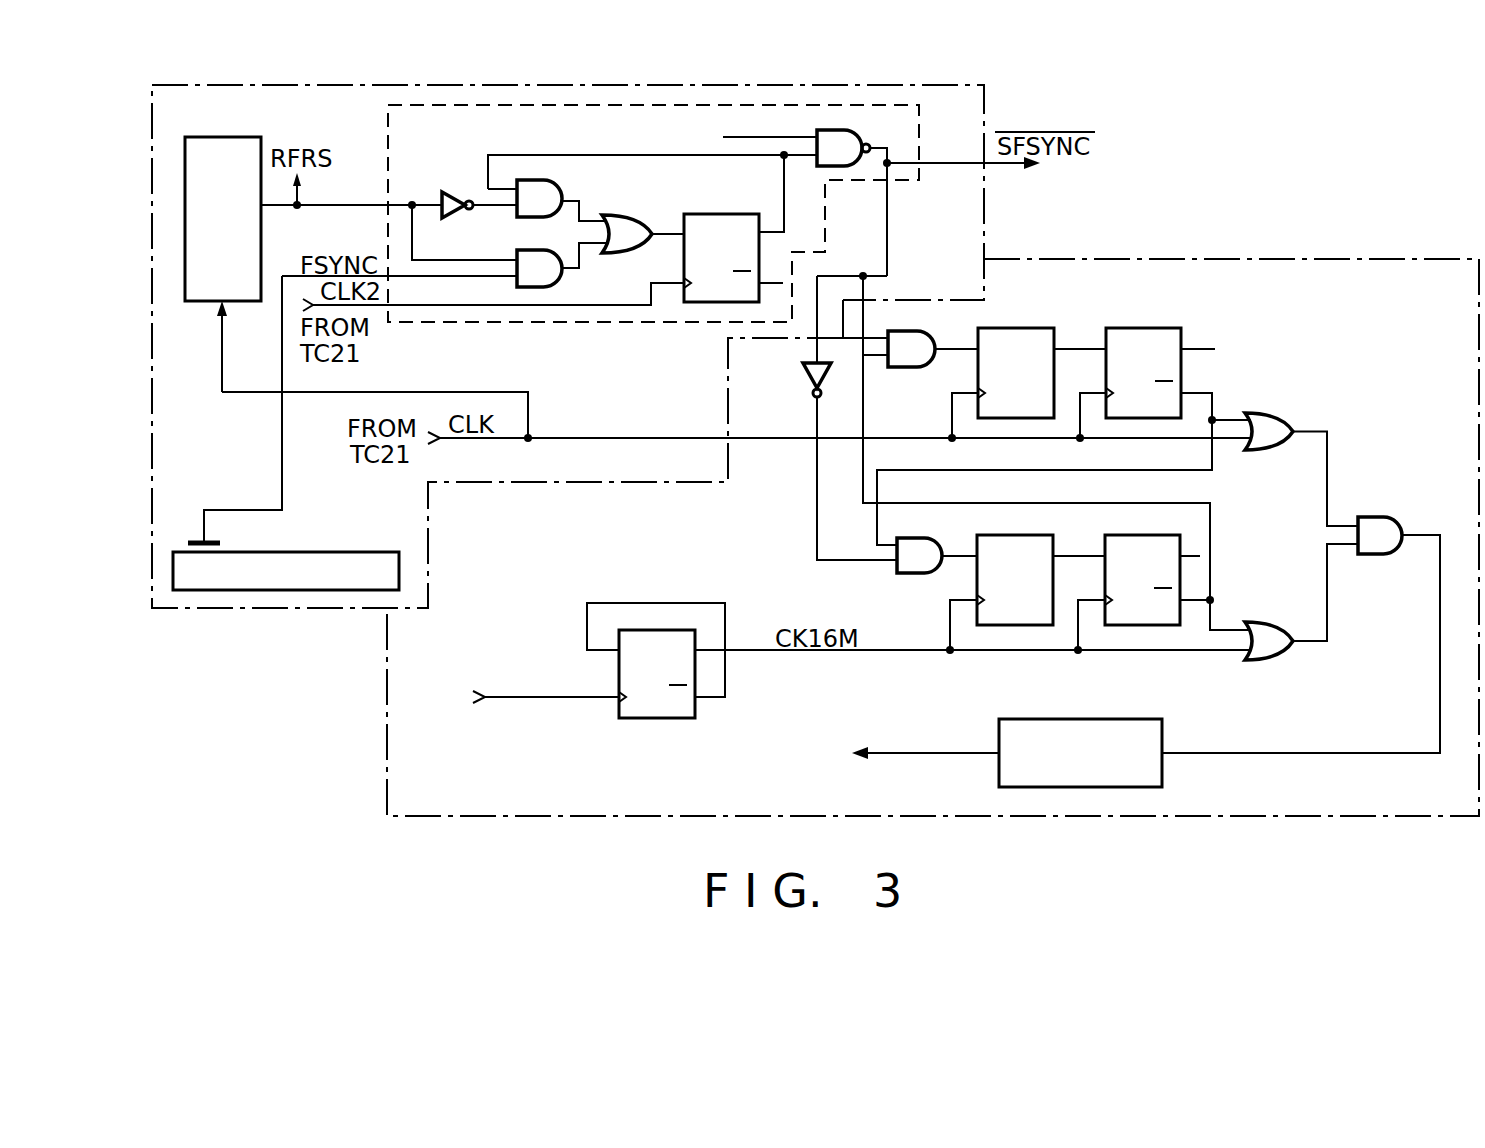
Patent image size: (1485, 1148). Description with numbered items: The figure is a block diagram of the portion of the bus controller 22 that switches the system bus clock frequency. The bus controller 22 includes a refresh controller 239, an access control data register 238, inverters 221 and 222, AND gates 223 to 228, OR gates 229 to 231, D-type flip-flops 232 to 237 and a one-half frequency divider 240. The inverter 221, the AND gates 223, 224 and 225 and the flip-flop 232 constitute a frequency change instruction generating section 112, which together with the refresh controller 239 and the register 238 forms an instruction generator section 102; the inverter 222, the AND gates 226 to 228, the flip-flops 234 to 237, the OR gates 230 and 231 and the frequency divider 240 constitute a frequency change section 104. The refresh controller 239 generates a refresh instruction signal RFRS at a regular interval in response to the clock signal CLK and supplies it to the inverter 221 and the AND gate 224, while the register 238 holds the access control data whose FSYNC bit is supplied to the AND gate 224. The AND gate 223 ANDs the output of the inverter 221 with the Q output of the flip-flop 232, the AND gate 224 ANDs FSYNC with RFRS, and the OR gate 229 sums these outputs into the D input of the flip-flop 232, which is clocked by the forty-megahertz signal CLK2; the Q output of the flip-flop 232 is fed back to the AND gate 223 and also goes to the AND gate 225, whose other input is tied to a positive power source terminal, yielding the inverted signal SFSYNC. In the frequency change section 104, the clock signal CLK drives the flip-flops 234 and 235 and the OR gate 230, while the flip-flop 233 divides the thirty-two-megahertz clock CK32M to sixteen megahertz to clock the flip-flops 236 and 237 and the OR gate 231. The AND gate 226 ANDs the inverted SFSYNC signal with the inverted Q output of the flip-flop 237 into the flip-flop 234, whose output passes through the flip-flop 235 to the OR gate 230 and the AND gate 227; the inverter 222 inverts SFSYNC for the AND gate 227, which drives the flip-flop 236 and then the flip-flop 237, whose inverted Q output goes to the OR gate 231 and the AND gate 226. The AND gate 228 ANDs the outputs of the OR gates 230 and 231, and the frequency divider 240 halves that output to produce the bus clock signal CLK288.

The bus controller 22 is at (286, 697).
The instruction generator section 102 is at (984, 103).
The frequency change section 104 is at (1268, 259).
The frequency change instruction generating section 112 is at (387, 116).
The inverter 221 is at (452, 192).
The inverter 222 is at (803, 366).
The AND gate 223 is at (556, 183).
The AND gate 224 is at (562, 283).
The AND gate 225 is at (820, 131).
The AND gate 226 is at (906, 332).
The AND gate 227 is at (912, 574).
The AND gate 228 is at (1375, 517).
The OR gate 229 is at (647, 216).
The OR gate 230 is at (1280, 413).
The OR gate 231 is at (1262, 622).
The D-type flip-flop 232 is at (707, 302).
The D-type flip-flop 233 is at (665, 718).
The D-type flip-flop 234 is at (1015, 328).
The D-type flip-flop 235 is at (1143, 328).
The D-type flip-flop 236 is at (1005, 535).
The D-type flip-flop 237 is at (1137, 535).
The access control data register 238 is at (357, 552).
The refresh controller 239 is at (197, 301).
The ½ frequency divider 240 is at (1162, 736).